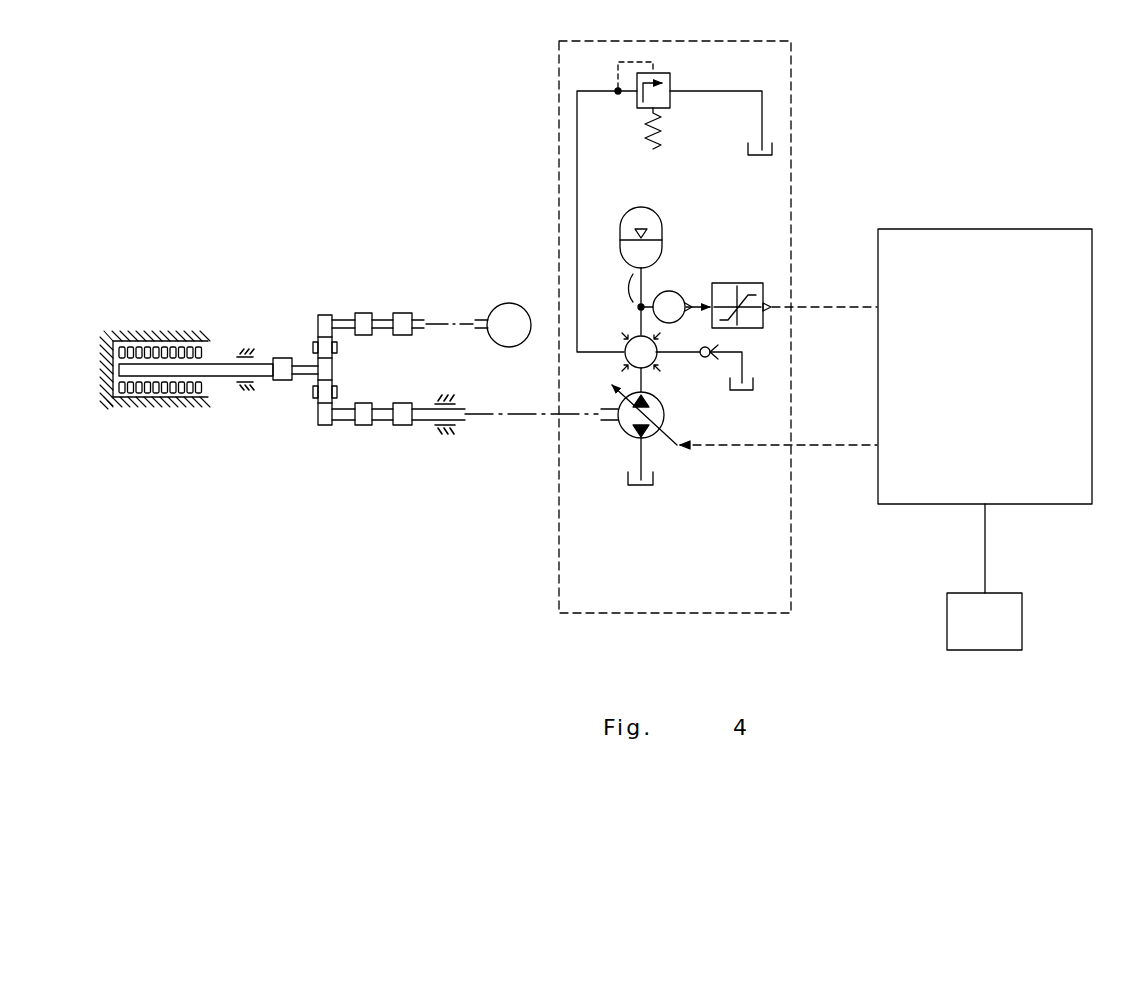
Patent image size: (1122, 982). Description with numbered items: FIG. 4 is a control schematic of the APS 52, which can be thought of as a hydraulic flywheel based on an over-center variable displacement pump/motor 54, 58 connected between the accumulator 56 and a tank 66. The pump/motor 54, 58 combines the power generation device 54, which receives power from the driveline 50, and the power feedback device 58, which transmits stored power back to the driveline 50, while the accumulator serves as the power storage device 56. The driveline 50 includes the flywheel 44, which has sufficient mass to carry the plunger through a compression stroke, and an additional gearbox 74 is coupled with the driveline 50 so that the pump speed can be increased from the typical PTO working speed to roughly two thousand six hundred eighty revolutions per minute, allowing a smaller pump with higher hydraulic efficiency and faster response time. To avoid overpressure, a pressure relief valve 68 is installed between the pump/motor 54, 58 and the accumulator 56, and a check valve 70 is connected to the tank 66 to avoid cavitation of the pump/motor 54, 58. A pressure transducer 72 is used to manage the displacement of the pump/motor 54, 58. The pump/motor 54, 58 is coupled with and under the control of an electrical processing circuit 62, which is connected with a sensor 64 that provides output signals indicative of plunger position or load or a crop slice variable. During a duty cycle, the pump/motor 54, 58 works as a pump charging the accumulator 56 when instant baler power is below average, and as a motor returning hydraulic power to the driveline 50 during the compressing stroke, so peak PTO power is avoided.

The flywheel 44 is at (156, 336).
The driveline 50 is at (252, 338).
The APS 52 is at (743, 308).
The power generation device 54 is at (689, 442).
The power feedback device 58 is at (648, 437).
The power storage device 56 is at (640, 208).
The electrical processing circuit 62 is at (1024, 229).
The sensor 64 is at (1022, 613).
The tank 66 is at (772, 149).
The pressure relief valve 68 is at (672, 78).
The check valve 70 is at (657, 363).
The pressure transducer 72 is at (674, 293).
The additional gearbox 74 is at (315, 418).